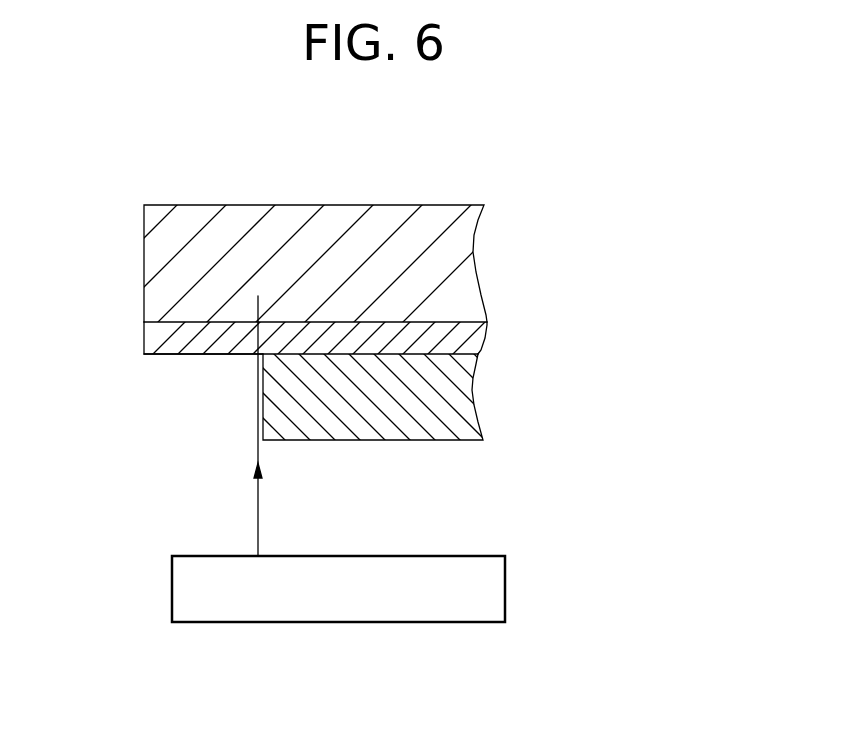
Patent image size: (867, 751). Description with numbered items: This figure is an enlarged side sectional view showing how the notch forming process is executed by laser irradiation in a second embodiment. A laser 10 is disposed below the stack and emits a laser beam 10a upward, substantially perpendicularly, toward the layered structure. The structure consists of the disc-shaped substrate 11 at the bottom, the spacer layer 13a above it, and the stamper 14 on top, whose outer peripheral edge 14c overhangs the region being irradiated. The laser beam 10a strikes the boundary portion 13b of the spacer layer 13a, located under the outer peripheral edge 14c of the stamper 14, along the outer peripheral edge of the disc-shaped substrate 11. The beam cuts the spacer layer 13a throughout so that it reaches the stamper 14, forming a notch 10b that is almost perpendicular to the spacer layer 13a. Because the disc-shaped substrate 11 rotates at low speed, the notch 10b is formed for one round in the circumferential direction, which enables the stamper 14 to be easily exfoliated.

The stamper 14 is at (295, 196).
The outer peripheral edge of the stamper 14c is at (177, 265).
The spacer layer 13a is at (465, 345).
The boundary portion of the spacer layer 13b is at (235, 338).
The notch 10b is at (255, 332).
The disc-shaped substrate 11 is at (467, 395).
The laser beam 10a is at (258, 480).
The laser 10 is at (505, 574).